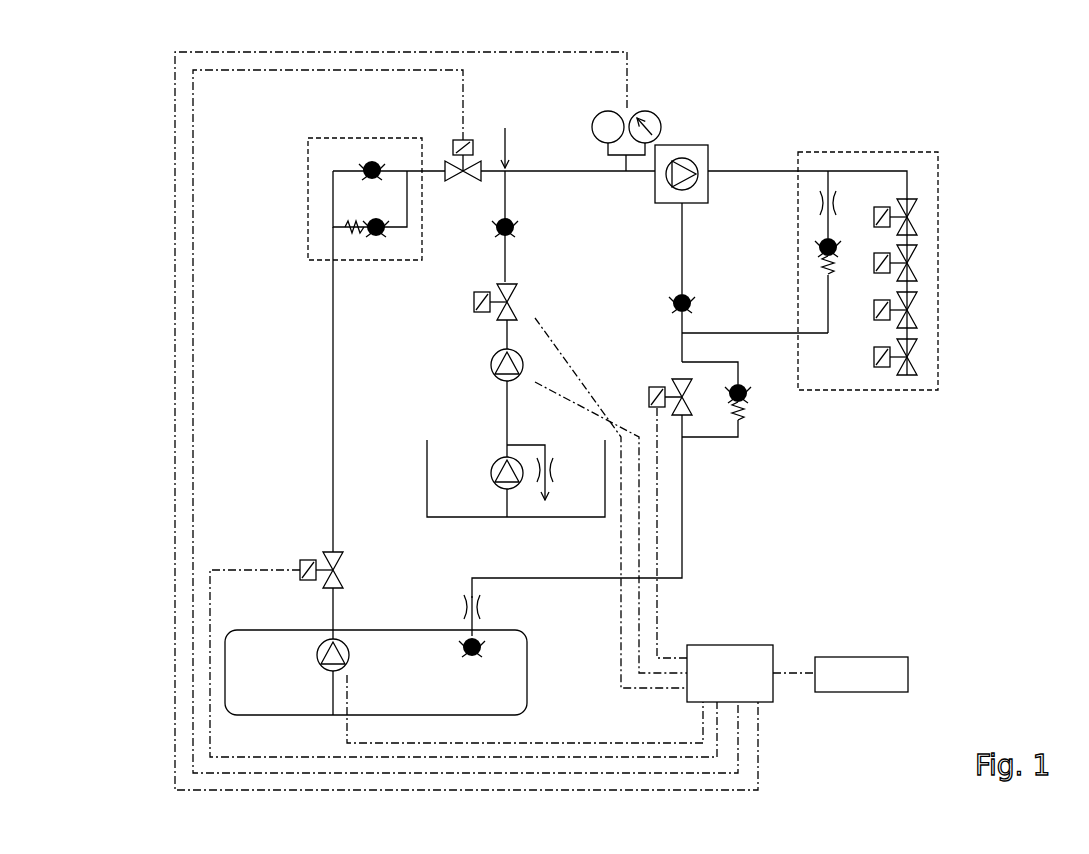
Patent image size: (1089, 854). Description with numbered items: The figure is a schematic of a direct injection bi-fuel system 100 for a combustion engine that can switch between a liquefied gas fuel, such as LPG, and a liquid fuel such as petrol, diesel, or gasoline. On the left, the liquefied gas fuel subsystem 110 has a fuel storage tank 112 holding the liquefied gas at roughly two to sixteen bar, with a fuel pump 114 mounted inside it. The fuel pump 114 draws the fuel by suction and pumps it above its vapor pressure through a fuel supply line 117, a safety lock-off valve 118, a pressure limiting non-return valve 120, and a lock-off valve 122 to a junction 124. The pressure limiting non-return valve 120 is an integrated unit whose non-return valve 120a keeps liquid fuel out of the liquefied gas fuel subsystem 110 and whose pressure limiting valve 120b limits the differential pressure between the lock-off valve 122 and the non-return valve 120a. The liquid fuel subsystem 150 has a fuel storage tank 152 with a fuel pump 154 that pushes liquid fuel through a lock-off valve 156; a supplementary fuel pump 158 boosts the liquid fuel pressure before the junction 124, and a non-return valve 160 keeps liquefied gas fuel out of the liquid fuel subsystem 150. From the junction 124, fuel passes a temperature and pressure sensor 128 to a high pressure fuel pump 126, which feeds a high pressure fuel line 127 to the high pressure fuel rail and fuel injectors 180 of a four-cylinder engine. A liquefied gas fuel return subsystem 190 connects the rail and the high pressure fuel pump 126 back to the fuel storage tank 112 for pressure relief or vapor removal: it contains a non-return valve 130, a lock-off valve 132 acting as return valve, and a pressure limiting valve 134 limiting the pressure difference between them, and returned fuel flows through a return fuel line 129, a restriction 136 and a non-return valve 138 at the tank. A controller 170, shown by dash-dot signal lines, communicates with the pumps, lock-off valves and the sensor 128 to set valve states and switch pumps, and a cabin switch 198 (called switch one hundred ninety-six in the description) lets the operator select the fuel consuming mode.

The direct injection bi-fuel system 100 is at (108, 168).
The liquefied gas fuel subsystem 110 is at (277, 322).
The fuel storage tank 112 is at (376, 672).
The fuel pump 114 is at (315, 678).
The fuel supply line 117 is at (322, 408).
The safety lock-off valve 118 is at (297, 553).
The pressure limiting non-return valve 120 is at (293, 150).
The non-return valve 120a is at (366, 152).
The pressure limiting valve 120b is at (365, 262).
The lock-off valve 122 is at (452, 140).
The junction 124 is at (505, 137).
The high pressure fuel pump 126 is at (680, 140).
The high pressure fuel line 127 is at (750, 165).
The temperature and pressure sensor 128 is at (588, 120).
The return fuel line 129 is at (690, 518).
The non-return valve 130 is at (712, 303).
The lock-off valve 132 is at (645, 386).
The pressure limiting valve 134 is at (760, 405).
The restriction 136 is at (480, 607).
The non-return valve 138 is at (475, 662).
The liquid fuel subsystem 150 is at (463, 318).
The fuel storage tank 152 is at (516, 478).
The fuel pump 154 is at (487, 455).
The lock-off valve 156 is at (534, 293).
The supplementary fuel pump 158 is at (465, 355).
The non-return valve 160 is at (535, 226).
The controller 170 is at (727, 630).
The high pressure fuel rail and fuel injectors 180 is at (828, 150).
The liquefied gas fuel return subsystem 190 is at (718, 268).
The switch 198 is at (877, 650).